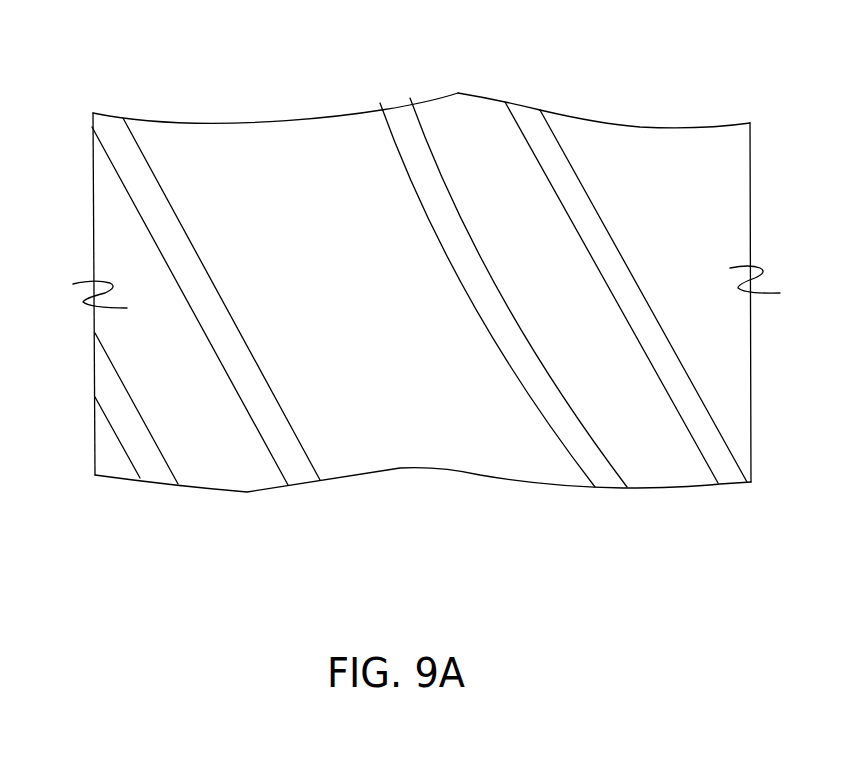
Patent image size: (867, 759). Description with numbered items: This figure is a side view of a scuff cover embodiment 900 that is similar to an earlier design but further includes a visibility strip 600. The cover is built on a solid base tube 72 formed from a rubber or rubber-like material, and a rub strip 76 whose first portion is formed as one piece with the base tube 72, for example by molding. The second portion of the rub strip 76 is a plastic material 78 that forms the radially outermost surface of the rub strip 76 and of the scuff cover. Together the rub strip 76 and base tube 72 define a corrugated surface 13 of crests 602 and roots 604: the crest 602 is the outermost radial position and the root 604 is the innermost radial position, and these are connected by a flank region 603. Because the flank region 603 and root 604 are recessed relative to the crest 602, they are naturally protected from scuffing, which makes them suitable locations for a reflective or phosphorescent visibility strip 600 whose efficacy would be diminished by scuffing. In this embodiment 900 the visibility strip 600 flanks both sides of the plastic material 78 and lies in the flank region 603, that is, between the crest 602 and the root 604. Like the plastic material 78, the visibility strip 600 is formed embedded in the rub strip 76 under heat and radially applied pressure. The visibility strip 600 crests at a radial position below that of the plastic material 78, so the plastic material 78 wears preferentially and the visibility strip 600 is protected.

The embodiment 900 is at (83, 503).
The root 604 is at (233, 112).
The crest 602 is at (455, 92).
The plastic material 78 is at (473, 110).
The rub strip 76 is at (512, 95).
The corrugated surface 13 is at (533, 503).
The base tube 72 is at (472, 453).
The flank region 603 is at (438, 517).
The visibility strip 600 is at (398, 113).